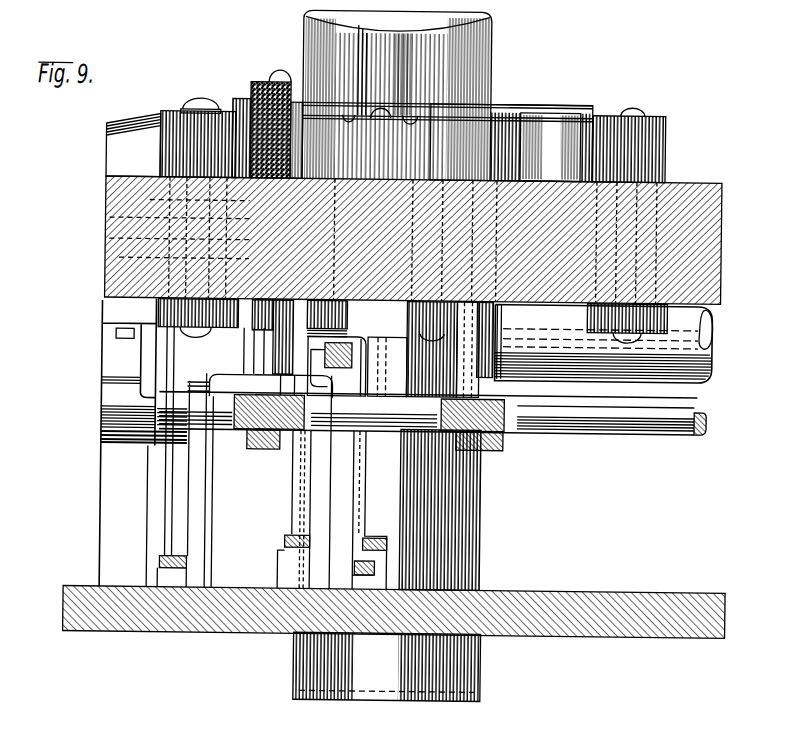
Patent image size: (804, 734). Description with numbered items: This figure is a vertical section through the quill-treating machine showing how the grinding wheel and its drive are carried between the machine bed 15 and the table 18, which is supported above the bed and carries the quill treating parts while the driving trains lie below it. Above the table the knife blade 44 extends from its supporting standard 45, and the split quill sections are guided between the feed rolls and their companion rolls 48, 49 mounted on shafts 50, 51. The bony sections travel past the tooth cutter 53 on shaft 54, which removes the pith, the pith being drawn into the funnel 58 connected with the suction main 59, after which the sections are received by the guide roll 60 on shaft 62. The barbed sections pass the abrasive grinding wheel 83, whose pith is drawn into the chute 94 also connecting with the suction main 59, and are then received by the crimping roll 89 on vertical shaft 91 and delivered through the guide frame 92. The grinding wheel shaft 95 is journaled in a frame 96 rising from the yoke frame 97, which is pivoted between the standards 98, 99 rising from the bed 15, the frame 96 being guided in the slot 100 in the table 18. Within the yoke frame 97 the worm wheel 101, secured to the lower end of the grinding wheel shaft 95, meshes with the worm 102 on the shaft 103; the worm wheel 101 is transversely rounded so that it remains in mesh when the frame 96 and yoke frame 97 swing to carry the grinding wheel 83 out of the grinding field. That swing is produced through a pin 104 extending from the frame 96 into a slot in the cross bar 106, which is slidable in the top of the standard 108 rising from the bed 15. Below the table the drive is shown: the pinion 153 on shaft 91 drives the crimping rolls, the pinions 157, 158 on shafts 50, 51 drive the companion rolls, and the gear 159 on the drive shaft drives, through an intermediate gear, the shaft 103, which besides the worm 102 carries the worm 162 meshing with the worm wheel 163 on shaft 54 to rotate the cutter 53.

The machine bed 15 is at (604, 628).
The table 18 is at (686, 185).
The knife blade 44 is at (398, 108).
The supporting standard 45 is at (360, 105).
The companion roll 48 is at (347, 111).
The companion roll 49 is at (410, 112).
The shaft 50 is at (312, 315).
The shaft 51 is at (335, 337).
The tooth cutter 53 is at (548, 147).
The shaft 54 is at (503, 340).
The funnel 58 is at (556, 104).
The suction main 59 is at (488, 56).
The guide roll 60 is at (660, 133).
The shaft 62 is at (694, 331).
The grinding wheel 83 is at (260, 88).
The crimping roll 89 is at (182, 116).
The vertical shaft 91 is at (108, 239).
The guide frame 92 is at (115, 164).
The chute 94 is at (240, 100).
The grinding wheel shaft 95 is at (279, 70).
The frame 96 is at (165, 199).
The yoke frame 97 is at (333, 378).
The standard 98 is at (204, 531).
The standard 99 is at (350, 489).
The slot 100 is at (122, 257).
The worm wheel 101 is at (245, 436).
The worm 102 is at (275, 449).
The shaft 103 is at (648, 422).
The pin 104 is at (322, 364).
The cross bar 106 is at (358, 342).
The standard 108 is at (372, 386).
The pinion 153 is at (160, 312).
The pinion 157 is at (442, 336).
The pinion 158 is at (343, 316).
The gear 159 is at (657, 330).
The worm 162 is at (505, 444).
The worm wheel 163 is at (522, 411).